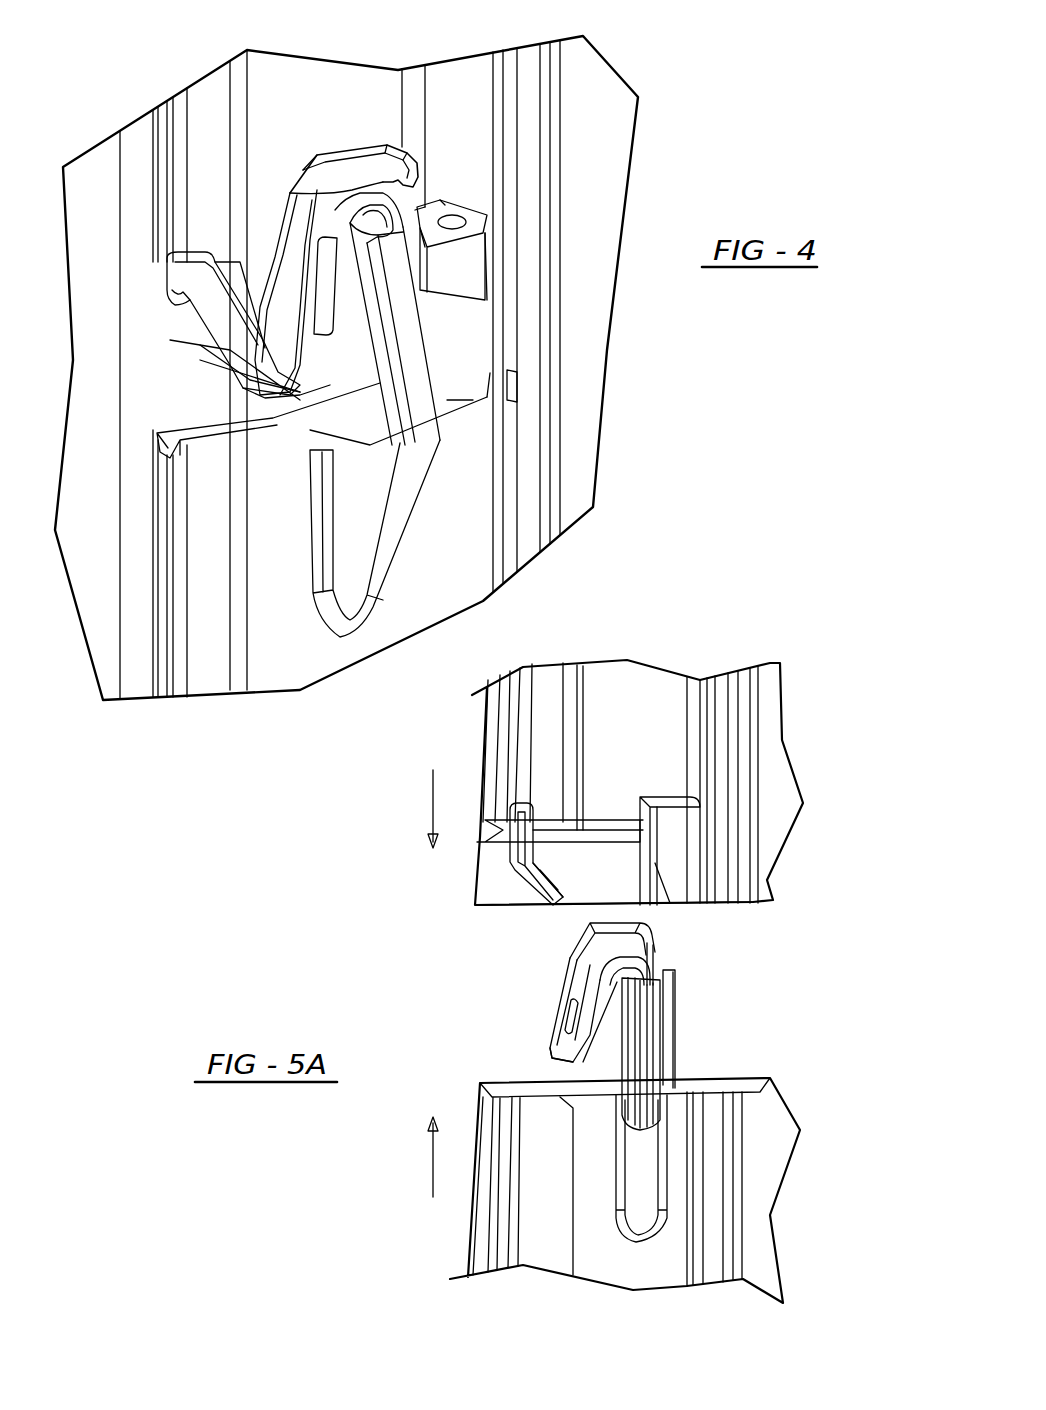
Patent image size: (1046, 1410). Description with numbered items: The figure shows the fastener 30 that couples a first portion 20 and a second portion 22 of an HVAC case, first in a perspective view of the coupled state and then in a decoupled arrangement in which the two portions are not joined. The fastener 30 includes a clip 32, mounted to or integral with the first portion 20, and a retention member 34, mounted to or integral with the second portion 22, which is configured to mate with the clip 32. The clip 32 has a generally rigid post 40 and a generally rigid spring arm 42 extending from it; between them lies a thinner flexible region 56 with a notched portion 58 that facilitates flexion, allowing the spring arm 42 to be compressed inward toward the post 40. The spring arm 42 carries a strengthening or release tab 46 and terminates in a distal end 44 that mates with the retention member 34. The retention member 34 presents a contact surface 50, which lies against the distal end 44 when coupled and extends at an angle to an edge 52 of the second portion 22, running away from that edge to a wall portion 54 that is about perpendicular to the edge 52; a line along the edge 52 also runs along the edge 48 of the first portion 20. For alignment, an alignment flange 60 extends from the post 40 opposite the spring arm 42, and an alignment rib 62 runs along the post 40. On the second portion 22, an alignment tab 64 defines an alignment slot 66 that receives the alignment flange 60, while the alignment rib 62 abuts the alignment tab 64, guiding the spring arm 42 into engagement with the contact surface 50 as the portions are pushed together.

In FIG. 4, the first portion 20 is at (207, 623).
In FIG. 5A, the first portion 20 is at (763, 1255).
In FIG. 4, the second portion 22 is at (480, 113).
In FIG. 5A, the second portion 22 is at (770, 697).
In FIG. 4, the fastener 30 is at (178, 353).
In FIG. 4, the clip 32 is at (420, 332).
In FIG. 5A, the clip 32 is at (594, 1080).
In FIG. 4, the retention member 34 is at (207, 335).
In FIG. 5A, the retention member 34 is at (567, 913).
In FIG. 4, the post 40 is at (363, 337).
In FIG. 5A, the post 40 is at (620, 1053).
In FIG. 4, the spring arm 42 is at (335, 190).
In FIG. 5A, the spring arm 42 is at (587, 943).
In FIG. 4, the distal end 44 is at (320, 423).
In FIG. 5A, the distal end 44 is at (547, 1067).
In FIG. 4, the release tab 46 is at (323, 275).
In FIG. 5A, the release tab 46 is at (572, 998).
In FIG. 4, the edge 48 is at (530, 400).
In FIG. 5A, the edge 48 is at (758, 1080).
In FIG. 4, the contact surface 50 is at (317, 380).
In FIG. 5A, the contact surface 50 is at (567, 913).
In FIG. 4, the edge 52 is at (530, 400).
In FIG. 5A, the edge 52 is at (775, 915).
In FIG. 4, the wall portion 54 is at (220, 350).
In FIG. 4, the flexible region 56 is at (407, 213).
In FIG. 5A, the flexible region 56 is at (677, 968).
In FIG. 4, the notched portion 58 is at (398, 322).
In FIG. 5A, the notched portion 58 is at (573, 1033).
In FIG. 4, the alignment flange 60 is at (448, 233).
In FIG. 5A, the alignment flange 60 is at (667, 992).
In FIG. 4, the alignment rib 62 is at (415, 358).
In FIG. 5A, the alignment rib 62 is at (653, 953).
In FIG. 4, the alignment tab 64 is at (460, 270).
In FIG. 5A, the alignment tab 64 is at (670, 838).
In FIG. 4, the alignment slot 66 is at (447, 230).
In FIG. 5A, the alignment slot 66 is at (668, 802).